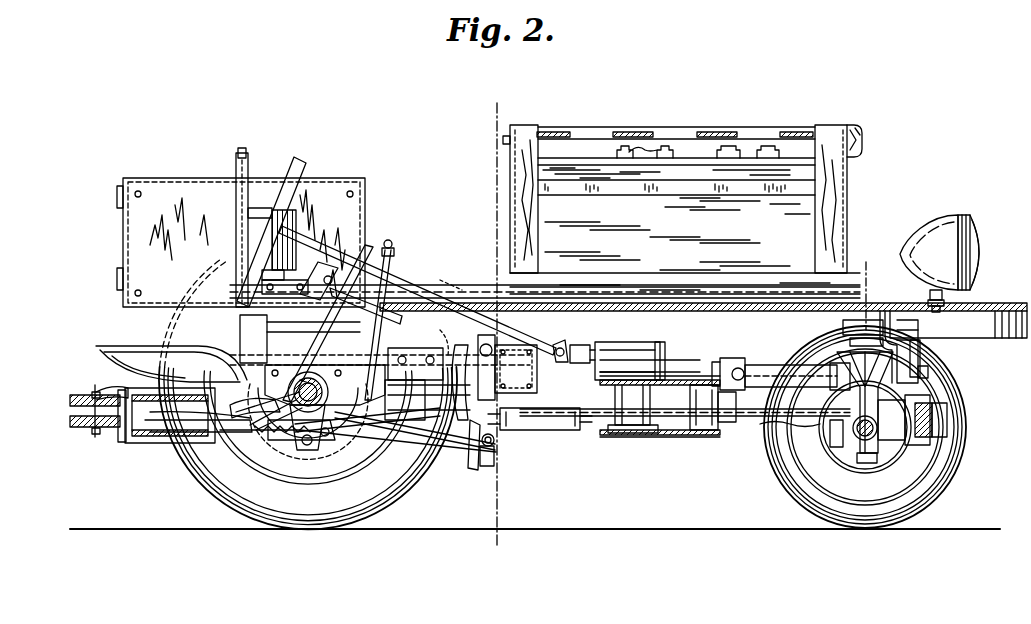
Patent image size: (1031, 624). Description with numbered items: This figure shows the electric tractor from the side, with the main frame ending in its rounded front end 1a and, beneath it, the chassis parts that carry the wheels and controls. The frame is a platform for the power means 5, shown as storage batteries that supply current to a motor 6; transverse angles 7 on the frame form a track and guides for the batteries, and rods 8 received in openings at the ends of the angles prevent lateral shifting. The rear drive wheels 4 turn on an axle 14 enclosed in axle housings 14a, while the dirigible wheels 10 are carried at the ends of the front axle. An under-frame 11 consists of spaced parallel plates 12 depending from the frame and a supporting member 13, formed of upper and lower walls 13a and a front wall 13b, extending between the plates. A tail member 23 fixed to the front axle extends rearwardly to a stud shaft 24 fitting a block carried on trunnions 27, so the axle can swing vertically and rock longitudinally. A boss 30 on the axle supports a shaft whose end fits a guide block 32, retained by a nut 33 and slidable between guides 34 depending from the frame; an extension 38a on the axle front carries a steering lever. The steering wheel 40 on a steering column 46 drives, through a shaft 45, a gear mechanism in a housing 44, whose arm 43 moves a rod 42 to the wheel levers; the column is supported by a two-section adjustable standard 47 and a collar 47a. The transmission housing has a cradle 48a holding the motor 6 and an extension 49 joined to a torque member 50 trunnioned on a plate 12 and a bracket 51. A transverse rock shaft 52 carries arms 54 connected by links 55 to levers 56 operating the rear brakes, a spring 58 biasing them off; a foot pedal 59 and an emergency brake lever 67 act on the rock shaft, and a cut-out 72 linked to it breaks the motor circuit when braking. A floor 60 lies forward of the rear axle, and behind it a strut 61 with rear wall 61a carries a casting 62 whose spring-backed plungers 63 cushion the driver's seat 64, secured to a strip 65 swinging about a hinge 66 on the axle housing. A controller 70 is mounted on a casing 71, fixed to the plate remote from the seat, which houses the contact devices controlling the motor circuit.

The front end 1a is at (1004, 303).
The rear drive wheels 4 is at (330, 522).
The power means 5 is at (497, 103).
The motor 6 is at (450, 284).
The angles 7 is at (500, 288).
The rods 8 is at (600, 290).
The dirigible wheels 10 is at (845, 528).
The under-frame 11 is at (680, 366).
The plates 12 is at (738, 432).
The supporting member 13 is at (690, 428).
The upper and lower walls 13a is at (696, 378).
The front wall 13b is at (686, 392).
The axle 14 is at (275, 395).
The axle housing 14a is at (290, 420).
The tail member 23 is at (785, 372).
The stud shaft 24 is at (782, 387).
The trunnions 27 is at (738, 358).
The boss 30 is at (905, 326).
The guide block 32 is at (918, 364).
The nut 33 is at (928, 372).
The guides 34 is at (930, 340).
The extension 38a is at (884, 455).
The steering wheel 40 is at (268, 218).
The rod 42 is at (796, 418).
The arm 43 is at (618, 433).
The housing 44 is at (622, 342).
The shaft 45 is at (585, 345).
The steering column 46 is at (428, 282).
The standard 47 is at (306, 323).
The collar 47a is at (350, 252).
The cradle 48a is at (410, 350).
The extension 49 is at (440, 452).
The torque member 50 is at (535, 440).
The bracket 51 is at (562, 348).
The rock shaft 52 is at (496, 465).
The arms 54 is at (474, 470).
The link 55 is at (380, 440).
The lever 56 is at (302, 440).
The spring 58 is at (262, 420).
The foot pedal 59 is at (463, 355).
The floor 60 is at (322, 446).
The strut member 61 is at (152, 446).
The rear wall 61a is at (122, 445).
The casting 62 is at (108, 430).
The plungers 63 is at (130, 390).
The driver's seat 64 is at (136, 348).
The strip 65 is at (215, 425).
The hinge 66 is at (262, 408).
The lever 67 is at (372, 306).
The controller 70 is at (262, 228).
The casing 71 is at (210, 180).
The cut-out 72 is at (560, 432).